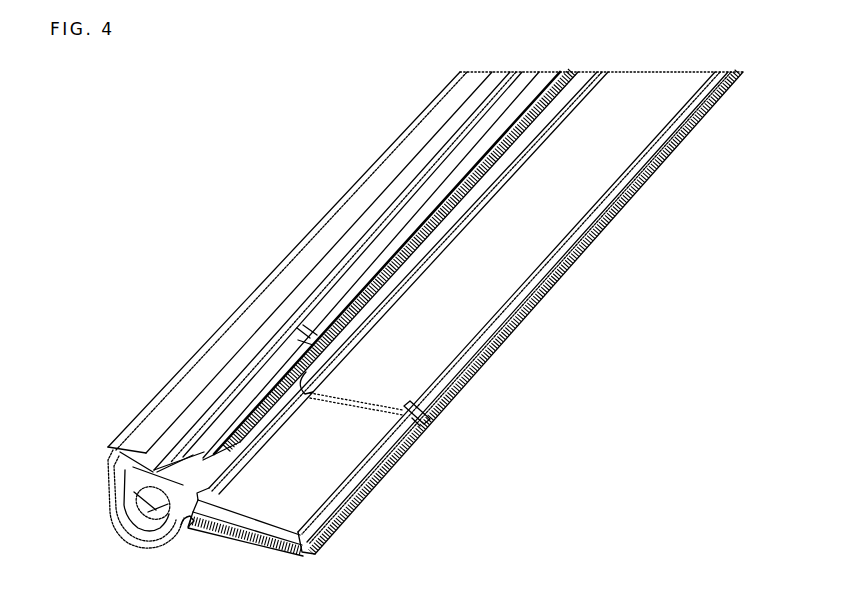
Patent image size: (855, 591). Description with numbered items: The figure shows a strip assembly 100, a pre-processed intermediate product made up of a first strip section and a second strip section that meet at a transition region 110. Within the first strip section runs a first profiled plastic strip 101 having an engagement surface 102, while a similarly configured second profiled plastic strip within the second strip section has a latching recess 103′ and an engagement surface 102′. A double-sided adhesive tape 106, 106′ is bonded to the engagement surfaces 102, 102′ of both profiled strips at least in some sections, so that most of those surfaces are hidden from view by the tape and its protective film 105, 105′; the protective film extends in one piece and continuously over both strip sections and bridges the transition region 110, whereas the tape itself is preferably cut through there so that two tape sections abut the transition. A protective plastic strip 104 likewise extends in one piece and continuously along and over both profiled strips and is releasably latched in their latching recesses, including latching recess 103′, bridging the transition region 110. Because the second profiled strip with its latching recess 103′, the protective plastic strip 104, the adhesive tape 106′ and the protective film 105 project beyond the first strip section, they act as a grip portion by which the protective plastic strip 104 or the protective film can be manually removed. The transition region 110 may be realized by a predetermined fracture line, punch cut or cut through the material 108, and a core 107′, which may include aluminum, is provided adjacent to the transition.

The strip assembly 100 is at (418, 309).
The first profiled plastic strip 101 is at (248, 400).
The engagement surface 102 is at (668, 158).
The engagement surface 102′ is at (358, 492).
The latching recess 103′ is at (145, 512).
The protective plastic strip 104 is at (392, 160).
The protective film 105 is at (488, 269).
The flat surface of second segment 105′ is at (312, 457).
The double-sided adhesive tape 106 is at (618, 187).
The double-sided adhesive tape 106′ is at (380, 443).
The core 107′ is at (186, 523).
The predetermined fracture line, punch cut or cut through the material 108 is at (415, 422).
The transition region 110 is at (417, 438).